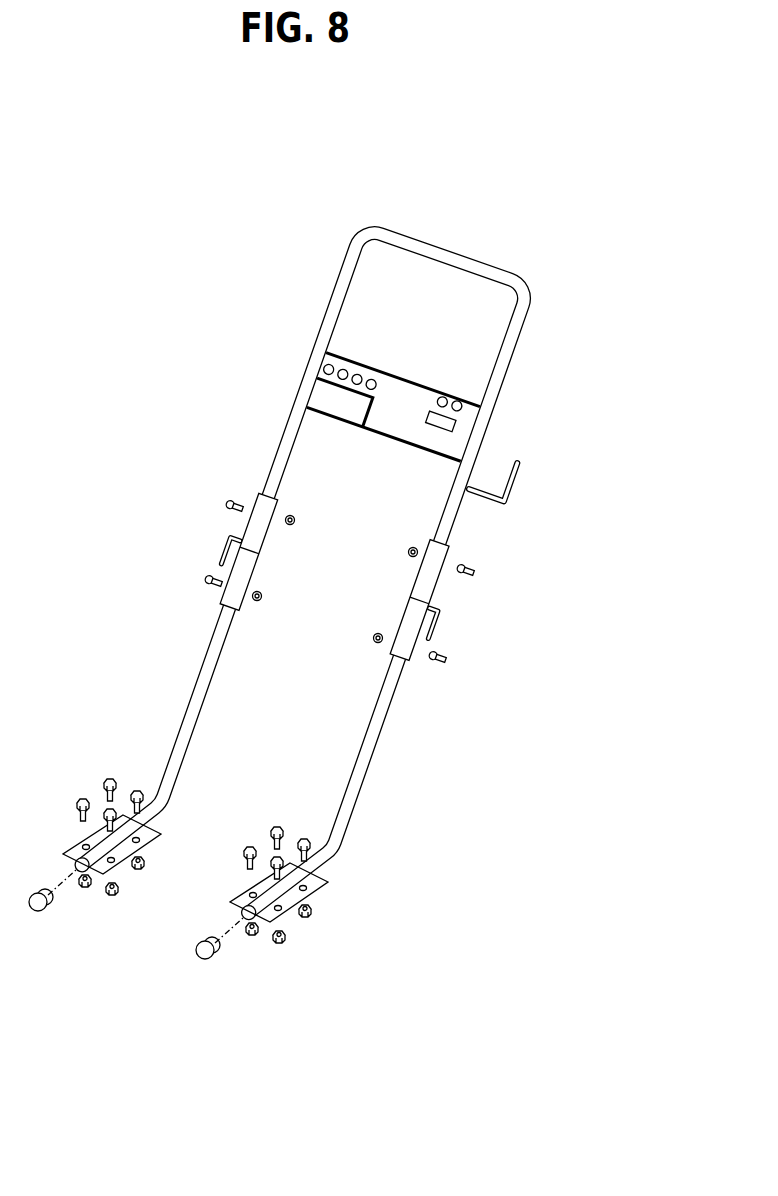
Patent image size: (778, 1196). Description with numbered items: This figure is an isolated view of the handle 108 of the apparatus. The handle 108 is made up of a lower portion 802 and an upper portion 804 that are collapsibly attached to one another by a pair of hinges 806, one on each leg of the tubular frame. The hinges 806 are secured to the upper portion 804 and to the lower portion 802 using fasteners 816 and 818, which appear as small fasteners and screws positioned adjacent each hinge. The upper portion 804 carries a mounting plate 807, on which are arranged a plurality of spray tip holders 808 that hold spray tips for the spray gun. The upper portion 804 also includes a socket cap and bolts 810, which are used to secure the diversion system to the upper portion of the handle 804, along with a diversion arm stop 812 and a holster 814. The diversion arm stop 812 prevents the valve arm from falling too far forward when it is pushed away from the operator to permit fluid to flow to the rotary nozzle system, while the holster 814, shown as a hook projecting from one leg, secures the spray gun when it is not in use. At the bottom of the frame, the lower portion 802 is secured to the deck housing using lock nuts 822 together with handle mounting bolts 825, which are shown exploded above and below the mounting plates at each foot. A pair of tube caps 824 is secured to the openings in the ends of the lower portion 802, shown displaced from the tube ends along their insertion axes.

The handle 108 is at (182, 170).
The lower portion 802 is at (392, 700).
The upper portion 804 is at (517, 363).
The hinges 806 is at (243, 540).
The mounting plate 807 is at (404, 390).
The spray tip holders 808 is at (327, 370).
The socket cap and bolt(s) 810 is at (462, 406).
The diversion arm stop 812 is at (454, 432).
The holster 814 is at (505, 492).
The fasteners 816 is at (410, 553).
The fasteners 818 is at (231, 500).
The lock nuts 822 is at (144, 878).
The tube caps 824 is at (50, 906).
The bolt 825 is at (83, 799).